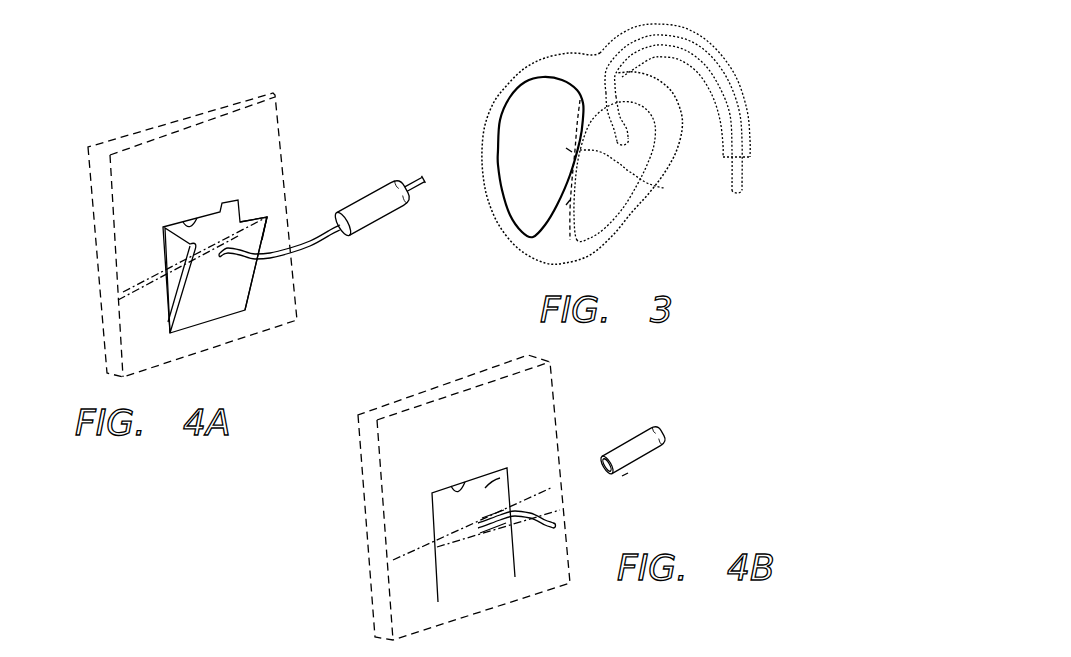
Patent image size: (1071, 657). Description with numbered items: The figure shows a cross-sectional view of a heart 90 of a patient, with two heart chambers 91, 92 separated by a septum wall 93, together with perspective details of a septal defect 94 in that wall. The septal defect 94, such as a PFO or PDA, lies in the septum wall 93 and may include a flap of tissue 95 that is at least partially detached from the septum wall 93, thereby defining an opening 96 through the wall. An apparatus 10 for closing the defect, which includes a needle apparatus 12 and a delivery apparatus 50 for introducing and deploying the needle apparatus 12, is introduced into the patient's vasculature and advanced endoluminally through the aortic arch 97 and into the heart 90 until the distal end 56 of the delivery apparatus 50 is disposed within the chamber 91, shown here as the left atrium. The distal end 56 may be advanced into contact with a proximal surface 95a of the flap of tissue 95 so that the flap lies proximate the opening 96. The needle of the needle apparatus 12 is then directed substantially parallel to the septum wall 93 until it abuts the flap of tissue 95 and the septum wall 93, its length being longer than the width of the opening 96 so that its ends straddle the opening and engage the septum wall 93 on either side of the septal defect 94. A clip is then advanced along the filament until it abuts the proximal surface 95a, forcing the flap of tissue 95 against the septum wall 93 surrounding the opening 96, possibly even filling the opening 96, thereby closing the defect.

In FIG. 3, the apparatus 10 is at (710, 46).
In FIG. 4B, the needle apparatus 12 is at (470, 550).
In FIG. 4A, the delivery apparatus 50 is at (364, 180).
In FIG. 4B, the delivery apparatus 50 is at (627, 422).
In FIG. 3, the distal end 56 is at (630, 137).
In FIG. 4A, the distal end 56 is at (365, 237).
In FIG. 4B, the distal end 56 is at (627, 475).
In FIG. 3, the heart 90 is at (508, 64).
In FIG. 3, the heart chamber 91 is at (615, 197).
In FIG. 3, the heart chamber 92 is at (540, 197).
In FIG. 3, the septum wall 93 is at (568, 203).
In FIG. 4A, the septum wall 93 is at (128, 213).
In FIG. 4B, the septum wall 93 is at (398, 472).
In FIG. 3, the septal defect 94 is at (566, 144).
In FIG. 4A, the septal defect 94 is at (257, 203).
In FIG. 4B, the septal defect 94 is at (510, 463).
In FIG. 3, the flap of tissue 95 is at (660, 187).
In FIG. 4A, the flap of tissue 95 is at (270, 214).
In FIG. 4B, the flap of tissue 95 is at (480, 487).
In FIG. 4A, the proximal surface 95a is at (203, 303).
In FIG. 3, the opening 96 is at (568, 152).
In FIG. 4A, the opening 96 is at (183, 220).
In FIG. 4B, the opening 96 is at (450, 487).
In FIG. 3, the aortic arch 97 is at (743, 91).